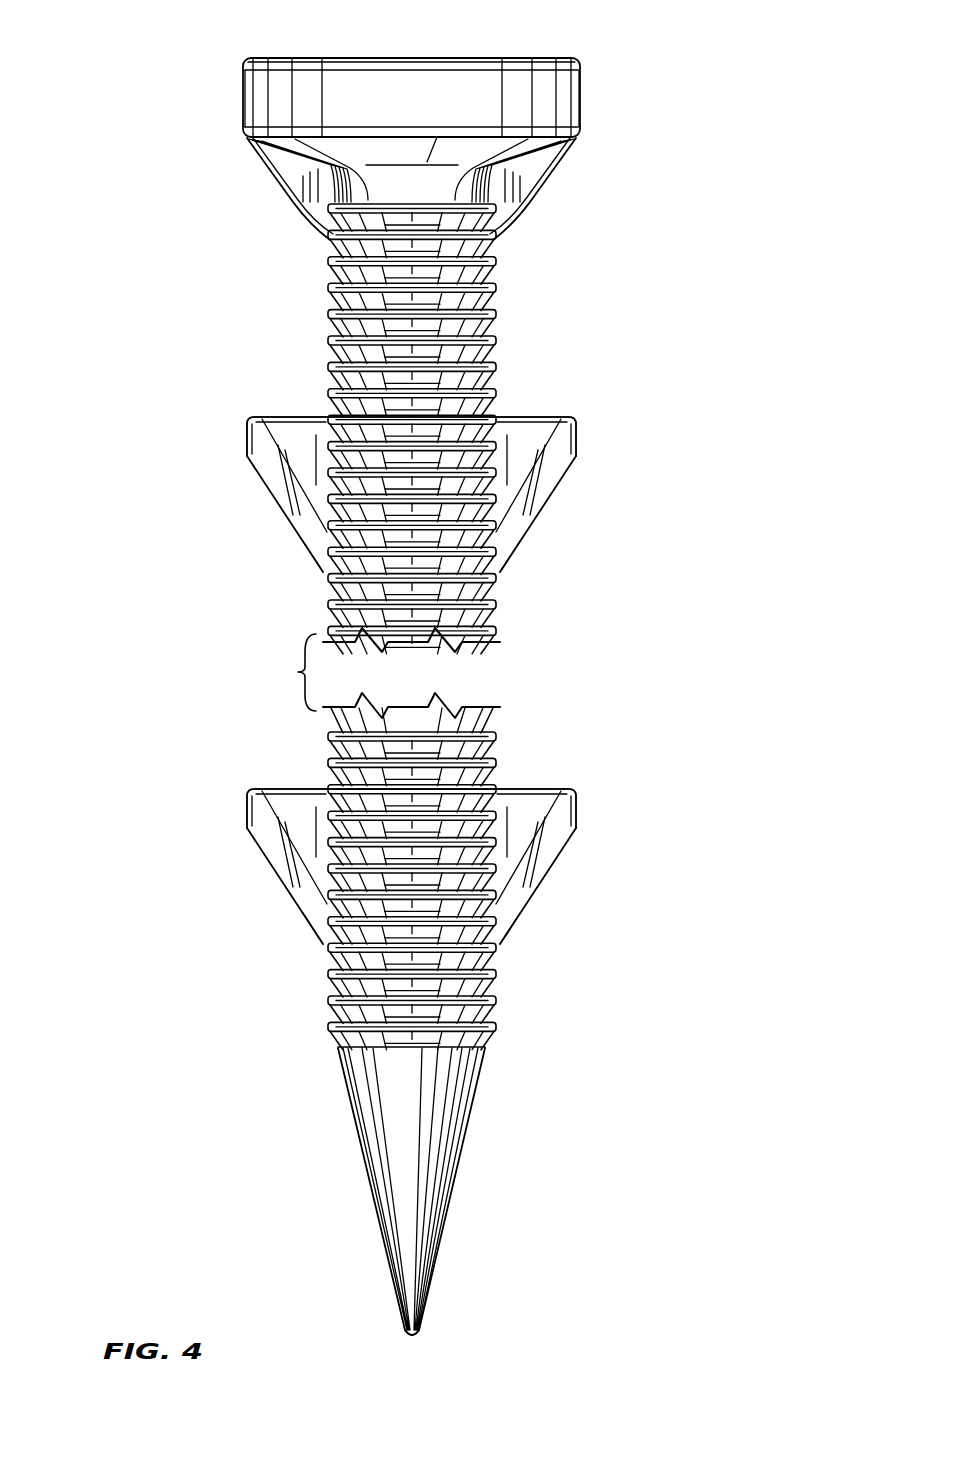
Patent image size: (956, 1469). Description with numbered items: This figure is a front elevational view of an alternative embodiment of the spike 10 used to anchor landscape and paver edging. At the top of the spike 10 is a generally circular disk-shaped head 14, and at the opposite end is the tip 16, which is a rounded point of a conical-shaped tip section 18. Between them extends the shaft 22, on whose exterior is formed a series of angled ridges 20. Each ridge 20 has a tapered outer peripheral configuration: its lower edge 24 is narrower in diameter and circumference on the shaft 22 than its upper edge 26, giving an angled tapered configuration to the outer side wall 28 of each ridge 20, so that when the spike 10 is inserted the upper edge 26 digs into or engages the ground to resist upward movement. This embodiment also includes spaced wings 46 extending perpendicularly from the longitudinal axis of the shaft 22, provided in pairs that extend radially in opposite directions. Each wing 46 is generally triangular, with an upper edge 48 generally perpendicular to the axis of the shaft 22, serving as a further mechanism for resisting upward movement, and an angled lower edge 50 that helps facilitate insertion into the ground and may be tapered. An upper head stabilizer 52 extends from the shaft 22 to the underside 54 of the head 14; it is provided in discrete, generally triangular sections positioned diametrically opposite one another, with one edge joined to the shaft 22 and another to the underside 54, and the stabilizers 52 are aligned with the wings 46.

The spike 10 is at (227, 58).
The head 14 is at (516, 57).
The tip 16 is at (405, 1340).
The conical-shaped tip section 18 is at (443, 1209).
The angled ridges 20 is at (452, 627).
The shaft 22 is at (363, 627).
The lower edge 24 is at (438, 627).
The upper edge 26 is at (438, 627).
The outer side wall 28 is at (438, 627).
The wings 46 is at (271, 494).
The upper edge 48 is at (260, 417).
The lower edge 50 is at (318, 563).
The upper head stabilizer 52 is at (297, 203).
The underside 54 is at (466, 151).